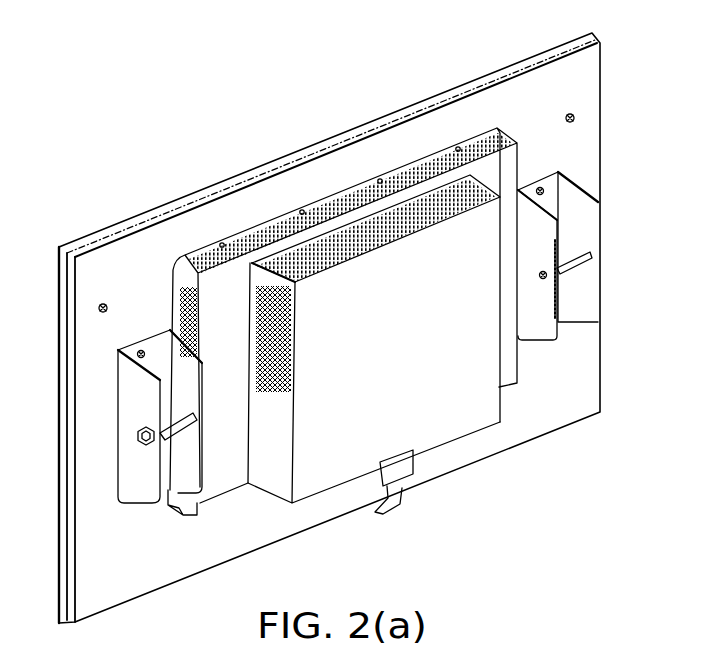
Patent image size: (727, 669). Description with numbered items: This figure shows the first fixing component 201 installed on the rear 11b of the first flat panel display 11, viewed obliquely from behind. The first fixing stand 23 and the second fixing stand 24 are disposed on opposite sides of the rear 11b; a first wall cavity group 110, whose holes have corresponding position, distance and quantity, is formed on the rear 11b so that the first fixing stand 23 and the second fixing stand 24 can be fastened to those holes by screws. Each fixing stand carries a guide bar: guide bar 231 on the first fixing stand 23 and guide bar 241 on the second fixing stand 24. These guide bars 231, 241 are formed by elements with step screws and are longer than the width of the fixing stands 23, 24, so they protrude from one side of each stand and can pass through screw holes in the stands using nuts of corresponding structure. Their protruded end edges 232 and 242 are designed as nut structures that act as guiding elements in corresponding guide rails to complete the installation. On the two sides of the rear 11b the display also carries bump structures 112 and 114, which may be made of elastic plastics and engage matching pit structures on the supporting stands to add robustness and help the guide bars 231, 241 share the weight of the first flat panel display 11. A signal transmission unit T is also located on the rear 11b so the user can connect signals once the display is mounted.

The first flat panel display 11 is at (450, 89).
The rear 11b is at (373, 158).
The bump structure 112 is at (104, 322).
The bump structure 114 is at (571, 114).
The first wall cavity group 110 is at (541, 180).
The first fixing component 201 is at (604, 188).
The first fixing stand 23 is at (582, 220).
The guide bar 231 is at (567, 278).
The protruded end edge 232 is at (592, 254).
The second fixing stand 24 is at (163, 370).
The guide bar 241 is at (175, 420).
The protruded end edge 242 is at (137, 440).
The signal transmission unit T is at (388, 507).